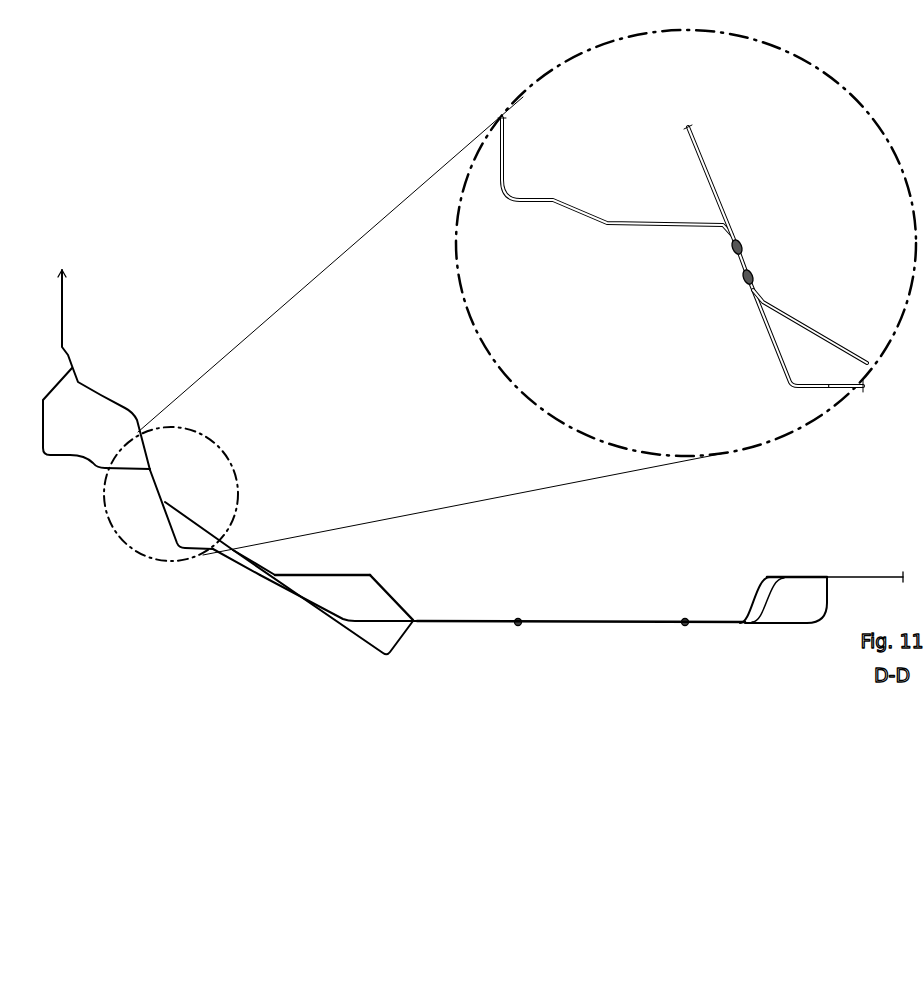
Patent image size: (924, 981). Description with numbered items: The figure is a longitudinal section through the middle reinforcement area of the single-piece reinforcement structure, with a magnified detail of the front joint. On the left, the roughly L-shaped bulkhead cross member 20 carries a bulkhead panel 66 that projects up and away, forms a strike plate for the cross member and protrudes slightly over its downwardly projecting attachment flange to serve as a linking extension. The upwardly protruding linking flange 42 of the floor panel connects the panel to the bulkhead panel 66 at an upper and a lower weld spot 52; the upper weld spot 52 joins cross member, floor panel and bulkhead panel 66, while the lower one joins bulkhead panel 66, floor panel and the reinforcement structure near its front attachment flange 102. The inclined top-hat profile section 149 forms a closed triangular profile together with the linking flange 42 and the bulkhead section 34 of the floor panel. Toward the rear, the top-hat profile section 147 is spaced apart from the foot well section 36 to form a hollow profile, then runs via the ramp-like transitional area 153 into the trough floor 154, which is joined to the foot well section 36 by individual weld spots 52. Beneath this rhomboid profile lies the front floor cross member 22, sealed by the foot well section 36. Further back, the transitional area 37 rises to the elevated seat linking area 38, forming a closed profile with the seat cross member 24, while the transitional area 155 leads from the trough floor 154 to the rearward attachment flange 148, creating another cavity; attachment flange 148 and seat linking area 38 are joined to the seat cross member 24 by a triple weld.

The bulkhead cross member 20 is at (58, 456).
The front floor cross member 22 is at (385, 658).
The seat cross member 24 is at (803, 626).
The bulkhead section 34 is at (236, 562).
The foot well section 36 is at (352, 624).
The transitional area 37 is at (762, 605).
The seat linking area 38 is at (888, 575).
The linking flange 42 is at (178, 546).
The weld spot 52 is at (518, 619).
The bulkhead panel 66 is at (62, 322).
The front attachment flange 102 is at (748, 262).
The top-hat profile section 147 is at (343, 574).
The attachment flange 148 is at (773, 575).
The inclined top-hat profile section 149 is at (178, 512).
The transitional area 153 is at (397, 600).
The trough floor 154 is at (607, 619).
The transitional area 155 is at (757, 590).